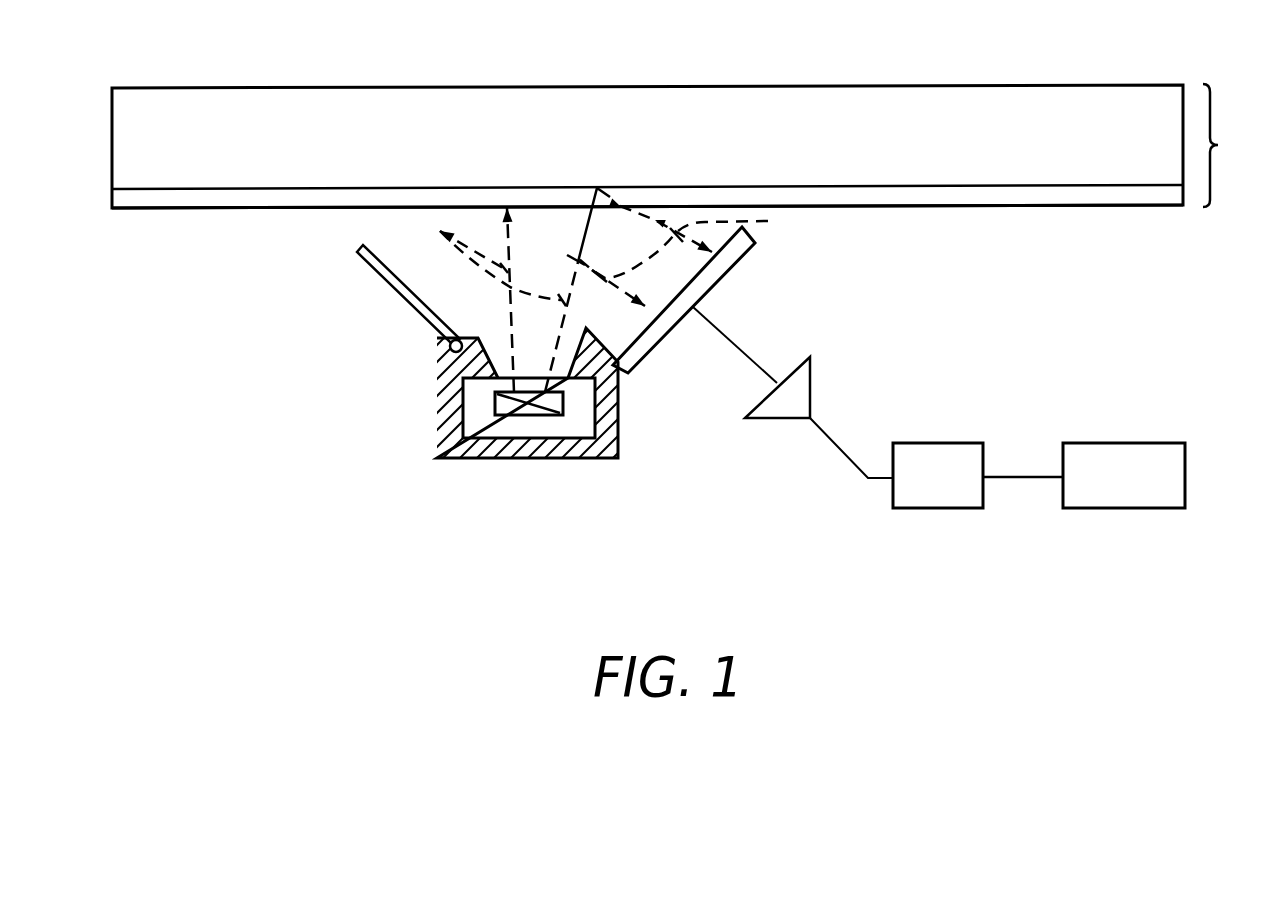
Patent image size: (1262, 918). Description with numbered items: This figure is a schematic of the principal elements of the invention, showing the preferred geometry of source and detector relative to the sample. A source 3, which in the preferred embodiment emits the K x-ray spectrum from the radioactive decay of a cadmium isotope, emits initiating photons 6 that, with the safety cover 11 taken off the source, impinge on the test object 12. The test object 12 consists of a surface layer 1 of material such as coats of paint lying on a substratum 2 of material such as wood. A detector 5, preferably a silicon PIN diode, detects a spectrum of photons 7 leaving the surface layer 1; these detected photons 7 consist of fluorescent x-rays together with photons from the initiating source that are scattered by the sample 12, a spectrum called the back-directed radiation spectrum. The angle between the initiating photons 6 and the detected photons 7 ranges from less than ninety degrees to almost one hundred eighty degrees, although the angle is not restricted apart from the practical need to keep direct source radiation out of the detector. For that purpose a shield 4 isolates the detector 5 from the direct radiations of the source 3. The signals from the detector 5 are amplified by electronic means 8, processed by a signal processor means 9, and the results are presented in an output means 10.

The surface layer 1 is at (155, 195).
The substratum 2 is at (372, 100).
The source 3 is at (522, 416).
The shield 4 is at (437, 408).
The detector 5 is at (717, 282).
The initiating photons 6 is at (491, 300).
The detected photons 7 is at (666, 290).
The electronic means 8 is at (811, 380).
The signal processor means 9 is at (927, 508).
The output means 10 is at (1109, 508).
The safety cover 11 is at (376, 272).
The test object 12 is at (1230, 145).